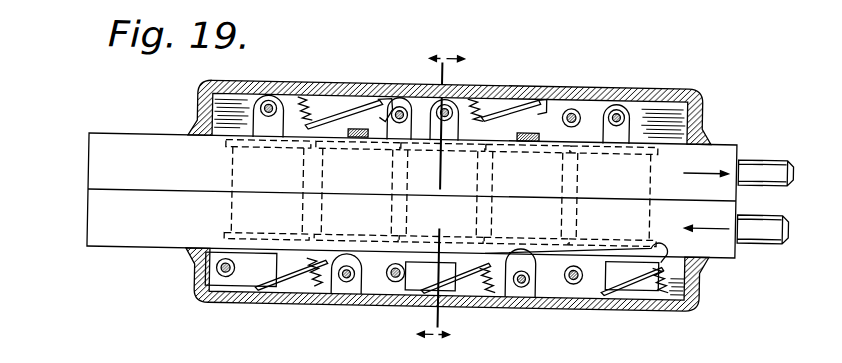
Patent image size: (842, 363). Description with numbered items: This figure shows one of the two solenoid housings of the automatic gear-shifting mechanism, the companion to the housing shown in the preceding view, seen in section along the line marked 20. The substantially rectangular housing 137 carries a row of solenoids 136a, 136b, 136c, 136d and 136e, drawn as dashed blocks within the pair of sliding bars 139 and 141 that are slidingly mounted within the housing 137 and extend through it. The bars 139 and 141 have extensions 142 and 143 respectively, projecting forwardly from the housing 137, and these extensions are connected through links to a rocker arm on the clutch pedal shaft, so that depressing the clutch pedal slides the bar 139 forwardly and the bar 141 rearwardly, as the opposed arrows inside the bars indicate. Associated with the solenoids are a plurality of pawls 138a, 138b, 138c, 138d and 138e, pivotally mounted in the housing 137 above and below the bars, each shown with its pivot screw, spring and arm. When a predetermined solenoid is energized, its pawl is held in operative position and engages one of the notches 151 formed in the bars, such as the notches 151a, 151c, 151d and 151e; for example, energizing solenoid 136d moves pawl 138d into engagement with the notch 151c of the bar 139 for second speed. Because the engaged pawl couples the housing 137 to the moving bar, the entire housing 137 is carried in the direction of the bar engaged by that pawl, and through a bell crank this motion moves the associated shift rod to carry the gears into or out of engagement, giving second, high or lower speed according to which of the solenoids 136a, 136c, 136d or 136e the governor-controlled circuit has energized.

The section line 20 is at (441, 199).
The solenoid 136a is at (578, 198).
The solenoid 136b is at (527, 194).
The solenoid 136c is at (442, 193).
The solenoid 136d is at (357, 191).
The solenoid 136e is at (233, 167).
The housing 137 is at (573, 79).
The pawl 138a is at (615, 278).
The pawl 138b is at (528, 109).
The pawl 138c is at (422, 277).
The pawl 138d is at (356, 107).
The pawl 138e is at (265, 274).
The sliding bar 139 is at (123, 120).
The sliding bar 141 is at (169, 249).
The extension 142 is at (777, 131).
The extension 143 is at (753, 235).
The notch 151 is at (499, 135).
The notch 151a is at (693, 272).
The notch 151c is at (509, 240).
The notch 151d is at (249, 112).
The notch 151e is at (339, 249).